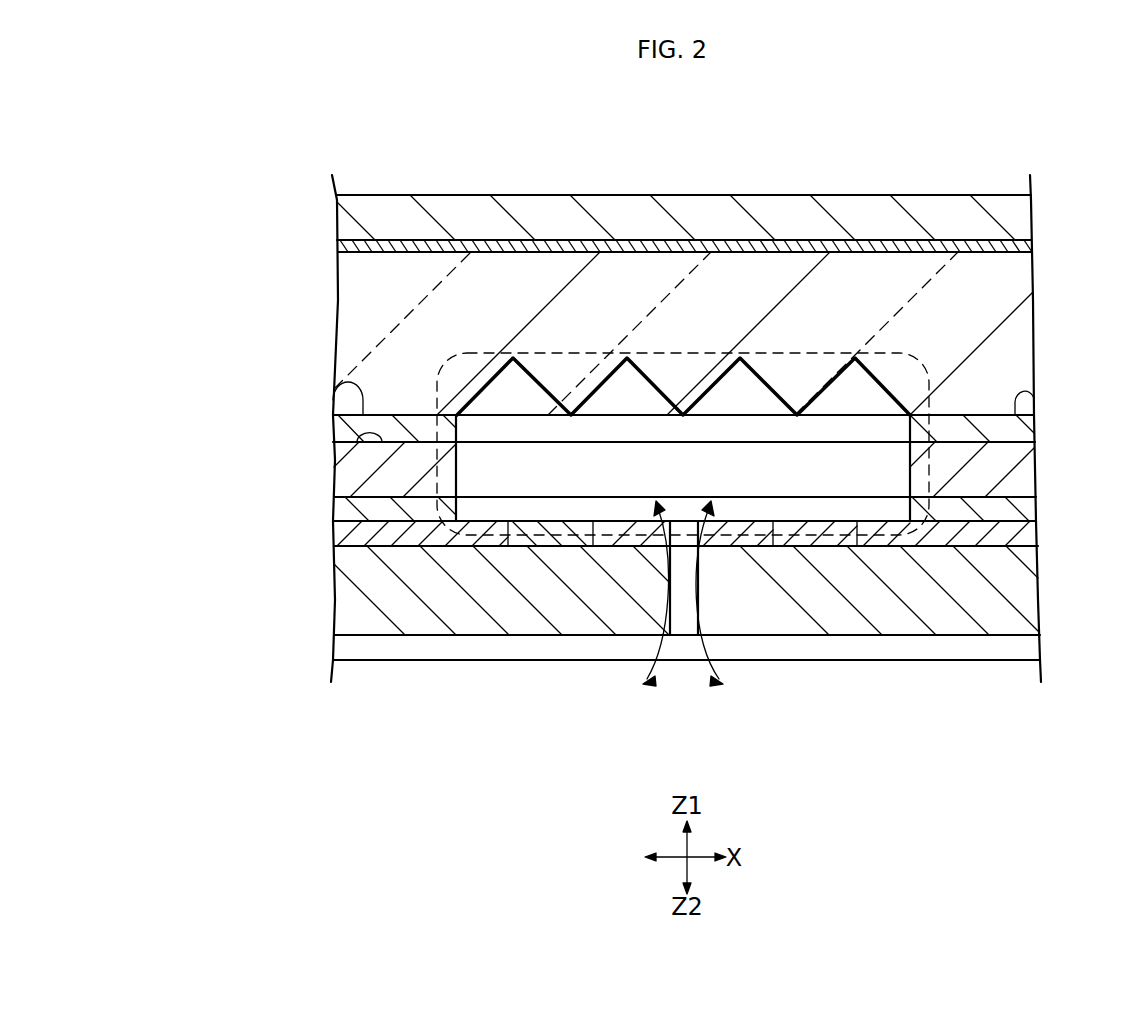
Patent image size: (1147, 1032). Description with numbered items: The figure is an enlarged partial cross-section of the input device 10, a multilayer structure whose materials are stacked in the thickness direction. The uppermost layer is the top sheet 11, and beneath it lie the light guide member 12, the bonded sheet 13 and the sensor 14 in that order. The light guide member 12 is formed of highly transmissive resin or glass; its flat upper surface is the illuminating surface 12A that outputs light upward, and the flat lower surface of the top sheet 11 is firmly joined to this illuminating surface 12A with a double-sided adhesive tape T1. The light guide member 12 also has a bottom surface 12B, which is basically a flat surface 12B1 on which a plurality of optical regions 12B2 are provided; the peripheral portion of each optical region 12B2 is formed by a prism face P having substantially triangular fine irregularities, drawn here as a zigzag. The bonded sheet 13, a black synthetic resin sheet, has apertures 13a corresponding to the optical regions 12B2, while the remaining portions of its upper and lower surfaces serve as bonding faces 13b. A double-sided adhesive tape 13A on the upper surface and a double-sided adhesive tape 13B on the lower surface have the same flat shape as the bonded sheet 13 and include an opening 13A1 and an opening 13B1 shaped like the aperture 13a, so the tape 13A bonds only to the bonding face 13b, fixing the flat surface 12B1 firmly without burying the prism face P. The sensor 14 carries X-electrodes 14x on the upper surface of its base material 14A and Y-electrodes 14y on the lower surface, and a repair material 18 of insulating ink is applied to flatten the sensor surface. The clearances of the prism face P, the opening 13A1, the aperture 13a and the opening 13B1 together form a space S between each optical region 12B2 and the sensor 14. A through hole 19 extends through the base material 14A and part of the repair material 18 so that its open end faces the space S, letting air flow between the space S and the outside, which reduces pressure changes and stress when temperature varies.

The input device 10 is at (304, 142).
The top sheet 11 is at (1020, 200).
The double-sided adhesive tape T1 is at (1020, 246).
The light guide member 12 is at (1020, 340).
The illuminating surface 12A is at (393, 250).
The bottom surface 12B is at (347, 382).
The flat surface 12B1 is at (1020, 395).
The optical region 12B2 is at (465, 345).
The space S is at (603, 348).
The prism face P is at (504, 392).
The double-sided adhesive tape 13A is at (1020, 433).
The opening 13A1 is at (488, 444).
The bonded sheet 13 is at (1020, 475).
The aperture 13a is at (585, 499).
The double-sided adhesive tape 13B is at (1020, 513).
The opening 13B1 is at (880, 506).
The bonding face 13b is at (365, 443).
The sensor 14 is at (1050, 522).
The X-electrode 14x is at (537, 548).
The Y-electrode 14y is at (913, 649).
The base material 14A is at (1028, 620).
The repair material 18 is at (412, 548).
The through hole 19 is at (683, 625).